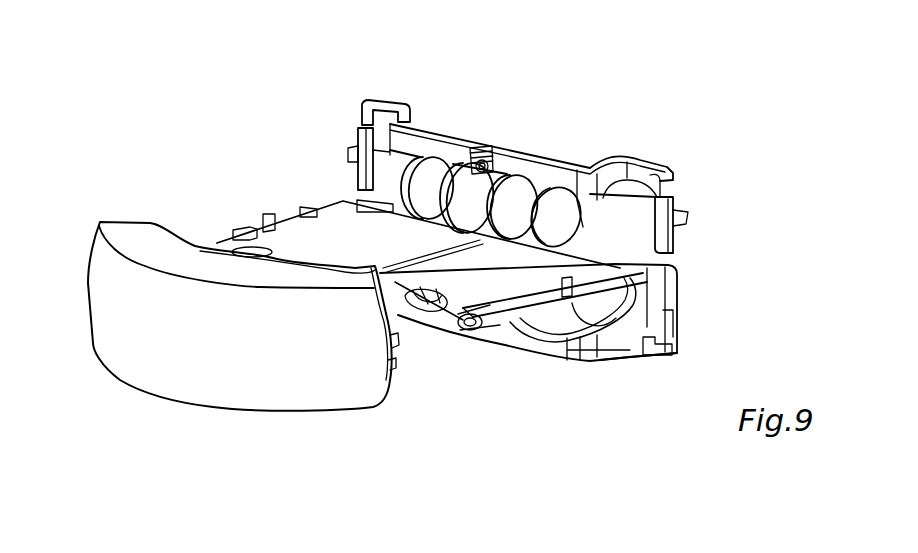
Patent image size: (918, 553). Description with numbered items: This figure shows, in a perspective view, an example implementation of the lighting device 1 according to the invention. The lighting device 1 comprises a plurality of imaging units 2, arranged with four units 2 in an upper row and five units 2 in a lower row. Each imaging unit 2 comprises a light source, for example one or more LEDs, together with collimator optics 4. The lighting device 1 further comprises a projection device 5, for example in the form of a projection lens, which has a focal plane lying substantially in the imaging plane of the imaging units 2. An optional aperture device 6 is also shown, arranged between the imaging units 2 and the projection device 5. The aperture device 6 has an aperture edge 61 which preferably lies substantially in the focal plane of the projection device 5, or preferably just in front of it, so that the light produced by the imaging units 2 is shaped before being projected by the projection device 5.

The lighting device 1 is at (182, 129).
The imaging unit 2 is at (427, 151).
The collimator optics 4 is at (418, 186).
The projection device 5 is at (345, 392).
The aperture device 6 is at (498, 360).
The aperture edge 61 is at (437, 305).